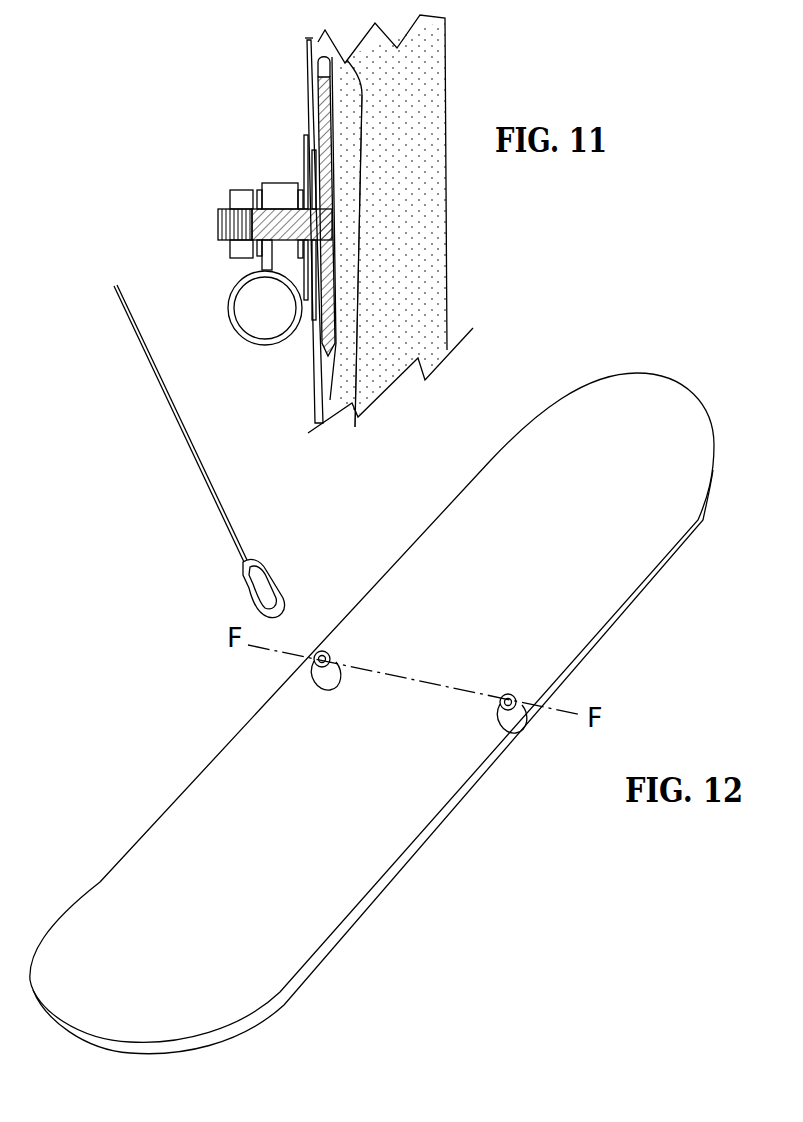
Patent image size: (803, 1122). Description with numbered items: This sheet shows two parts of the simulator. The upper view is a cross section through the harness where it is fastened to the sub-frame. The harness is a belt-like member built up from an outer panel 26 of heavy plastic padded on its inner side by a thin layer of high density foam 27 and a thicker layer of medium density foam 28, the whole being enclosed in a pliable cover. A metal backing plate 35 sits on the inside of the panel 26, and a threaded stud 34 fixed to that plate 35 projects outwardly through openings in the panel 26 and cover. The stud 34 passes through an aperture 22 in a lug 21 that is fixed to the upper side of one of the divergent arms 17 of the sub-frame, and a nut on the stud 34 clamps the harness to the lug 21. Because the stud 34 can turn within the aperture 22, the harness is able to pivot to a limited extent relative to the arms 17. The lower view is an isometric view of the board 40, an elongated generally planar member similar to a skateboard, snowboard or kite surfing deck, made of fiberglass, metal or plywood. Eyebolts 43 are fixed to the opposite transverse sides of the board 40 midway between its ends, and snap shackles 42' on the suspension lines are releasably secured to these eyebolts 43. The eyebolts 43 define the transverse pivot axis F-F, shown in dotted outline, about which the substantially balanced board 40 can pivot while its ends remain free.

In FIG. 11, the arm 17 is at (235, 297).
In FIG. 11, the lug 21 is at (284, 183).
In FIG. 11, the aperture 22 is at (273, 207).
In FIG. 11, the outer panel 26 is at (322, 390).
In FIG. 11, the foam layer 27 is at (353, 305).
In FIG. 11, the foam layer 28 is at (430, 73).
In FIG. 11, the threaded stud 34 is at (218, 223).
In FIG. 11, the metal backing plate 35 is at (327, 178).
In FIG. 12, the board 40 is at (598, 407).
In FIG. 12, the snap shackle 42' is at (222, 451).
In FIG. 12, the eyebolt 43 is at (312, 657).